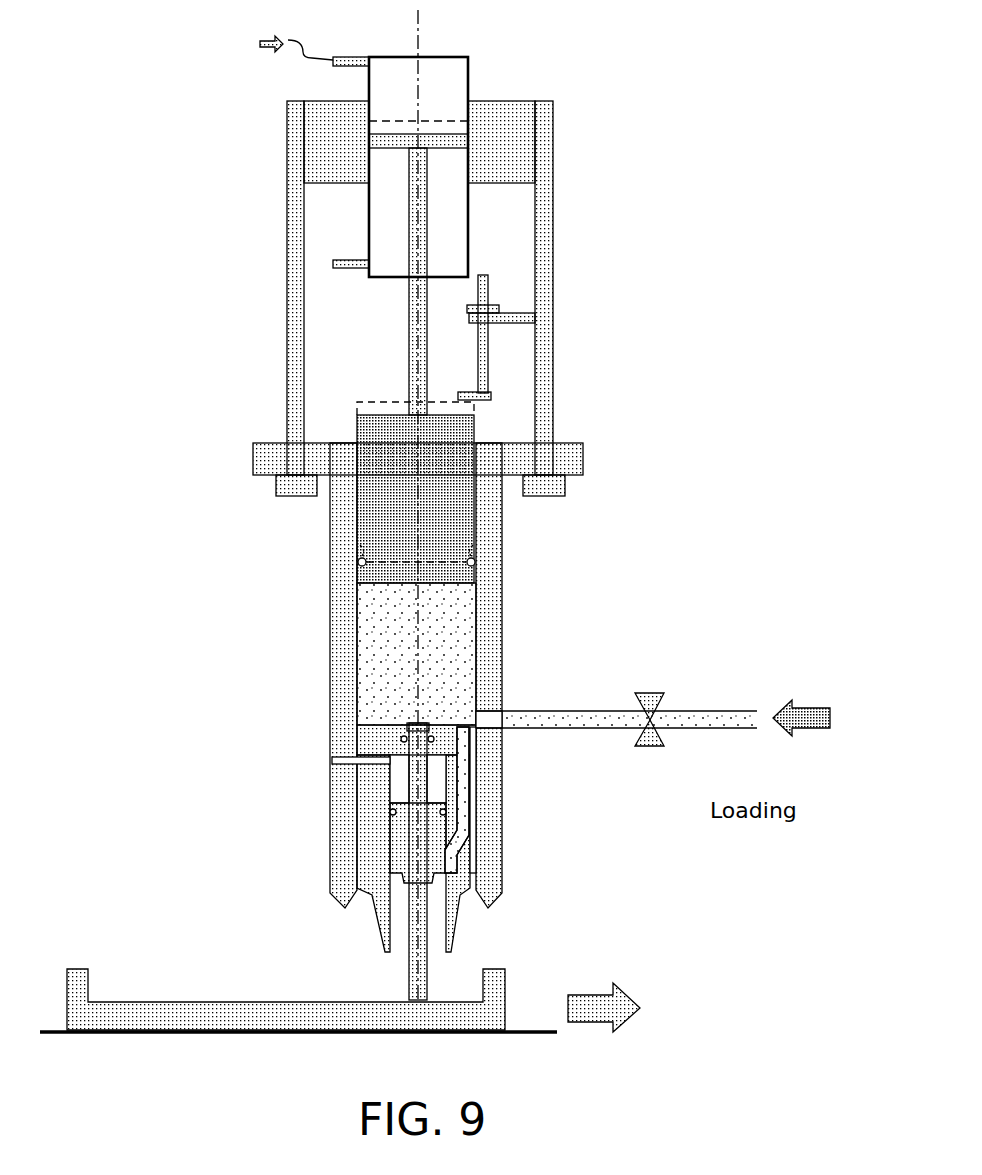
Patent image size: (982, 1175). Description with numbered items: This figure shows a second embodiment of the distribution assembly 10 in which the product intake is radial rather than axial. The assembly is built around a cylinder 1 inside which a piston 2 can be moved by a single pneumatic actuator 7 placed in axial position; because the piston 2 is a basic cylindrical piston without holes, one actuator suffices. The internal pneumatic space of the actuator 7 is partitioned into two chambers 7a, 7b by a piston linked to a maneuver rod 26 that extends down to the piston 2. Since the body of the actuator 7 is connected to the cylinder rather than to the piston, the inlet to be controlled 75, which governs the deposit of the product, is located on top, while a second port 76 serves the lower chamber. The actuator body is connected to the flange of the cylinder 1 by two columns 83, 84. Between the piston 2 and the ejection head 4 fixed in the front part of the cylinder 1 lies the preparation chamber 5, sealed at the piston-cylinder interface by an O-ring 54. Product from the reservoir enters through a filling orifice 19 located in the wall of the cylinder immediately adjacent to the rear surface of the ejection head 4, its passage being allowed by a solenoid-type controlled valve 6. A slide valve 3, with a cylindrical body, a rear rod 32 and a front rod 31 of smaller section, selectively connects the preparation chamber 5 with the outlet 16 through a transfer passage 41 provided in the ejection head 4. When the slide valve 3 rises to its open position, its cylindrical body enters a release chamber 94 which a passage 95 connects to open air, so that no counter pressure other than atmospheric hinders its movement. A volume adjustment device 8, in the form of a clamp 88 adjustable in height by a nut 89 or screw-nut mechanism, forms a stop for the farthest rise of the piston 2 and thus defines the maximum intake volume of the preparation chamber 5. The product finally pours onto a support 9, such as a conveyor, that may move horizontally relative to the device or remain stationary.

The cylinder 1 is at (502, 660).
The piston 2 is at (357, 425).
The slide valve 3 is at (464, 861).
The ejection head 4 is at (355, 825).
The preparation chamber 5 is at (391, 668).
The controlled valve 6 is at (666, 700).
The pneumatic actuator 7 is at (447, 151).
The chamber 7a is at (462, 245).
The chamber 7b is at (462, 113).
The volume adjustment device 8 is at (520, 302).
The support 9 is at (141, 1010).
The distribution assembly 10 is at (763, 532).
The outlet nozzle 16 is at (383, 920).
The filling orifice 19 is at (493, 712).
The piston rod 26 is at (409, 355).
The front rod 31 is at (415, 996).
The rear rod 32 is at (420, 733).
The transfer passage 41 is at (465, 800).
The O-ring 54 is at (475, 562).
The inlet to be controlled 75 is at (303, 58).
The lower air port 76 is at (333, 264).
The column 83 is at (287, 318).
The column 84 is at (555, 345).
The clamp 88 is at (458, 392).
The nut 89 is at (490, 305).
The release chamber 94 is at (392, 788).
The passage 95 is at (349, 757).